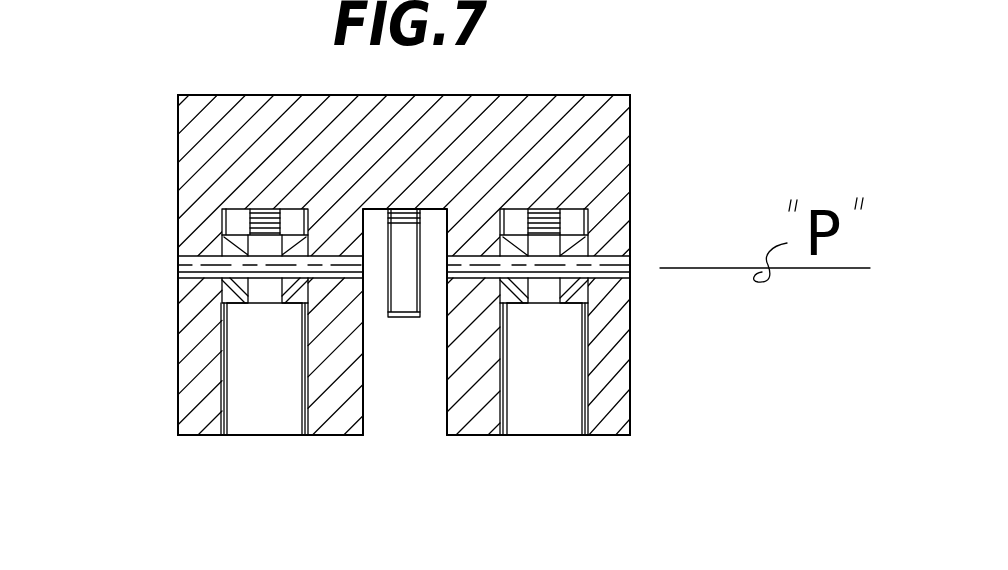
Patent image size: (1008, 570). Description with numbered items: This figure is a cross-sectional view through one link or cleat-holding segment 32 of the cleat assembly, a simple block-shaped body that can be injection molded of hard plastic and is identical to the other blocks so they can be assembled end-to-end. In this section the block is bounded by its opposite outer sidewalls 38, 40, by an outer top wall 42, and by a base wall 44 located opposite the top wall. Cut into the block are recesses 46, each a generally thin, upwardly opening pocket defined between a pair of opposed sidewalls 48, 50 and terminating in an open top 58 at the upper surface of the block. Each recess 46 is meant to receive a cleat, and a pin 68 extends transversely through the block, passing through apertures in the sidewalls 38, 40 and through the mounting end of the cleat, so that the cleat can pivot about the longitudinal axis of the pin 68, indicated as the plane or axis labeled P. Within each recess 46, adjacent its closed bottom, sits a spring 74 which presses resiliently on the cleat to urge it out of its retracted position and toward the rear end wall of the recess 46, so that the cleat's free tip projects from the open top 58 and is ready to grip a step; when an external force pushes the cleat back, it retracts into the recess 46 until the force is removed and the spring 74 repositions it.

The cleat-holding segment 32 is at (612, 135).
The base wall 44 is at (553, 95).
The outer sidewall 38 is at (175, 367).
The outer sidewall 40 is at (630, 362).
The outer top wall 42 is at (615, 437).
The pin 68 is at (617, 258).
The recess 46 is at (259, 410).
The sidewall of recess 50 is at (303, 333).
The sidewall of recess 48 is at (365, 383).
The open top 58 is at (390, 437).
The spring 74 is at (404, 318).